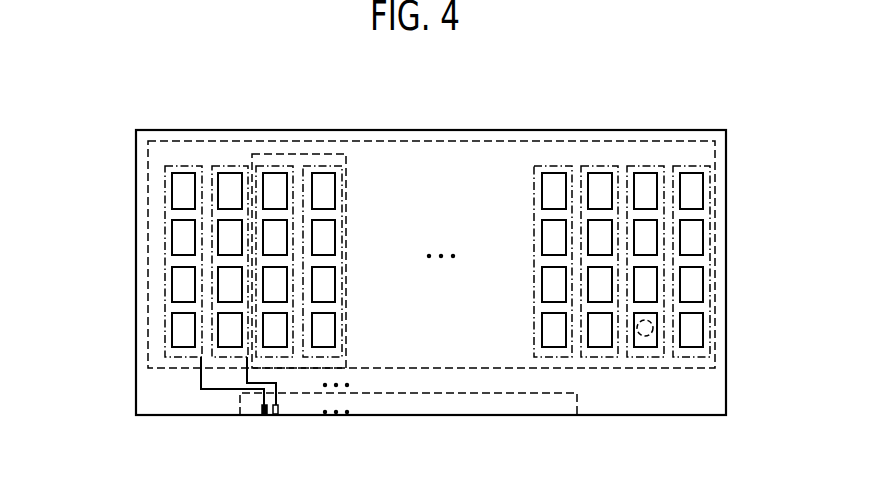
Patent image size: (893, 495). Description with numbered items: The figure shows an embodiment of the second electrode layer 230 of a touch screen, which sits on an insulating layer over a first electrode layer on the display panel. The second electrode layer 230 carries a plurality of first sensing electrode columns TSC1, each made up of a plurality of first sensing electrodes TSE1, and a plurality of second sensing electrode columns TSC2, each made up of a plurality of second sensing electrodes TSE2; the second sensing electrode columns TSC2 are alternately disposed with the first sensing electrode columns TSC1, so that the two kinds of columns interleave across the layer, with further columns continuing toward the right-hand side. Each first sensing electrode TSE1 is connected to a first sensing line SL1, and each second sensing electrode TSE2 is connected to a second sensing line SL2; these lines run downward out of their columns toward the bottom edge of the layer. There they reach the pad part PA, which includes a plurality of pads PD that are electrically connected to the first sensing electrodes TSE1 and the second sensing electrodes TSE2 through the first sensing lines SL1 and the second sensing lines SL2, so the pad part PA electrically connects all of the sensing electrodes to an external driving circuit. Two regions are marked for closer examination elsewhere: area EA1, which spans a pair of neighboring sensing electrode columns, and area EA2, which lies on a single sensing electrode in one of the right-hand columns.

The second electrode layer 230 is at (687, 129).
The second sensing electrode column TSC2 is at (140, 221).
The first sensing electrode column TSC1 is at (178, 221).
The second sensing electrode TSE2 is at (172, 192).
The first sensing electrode TSE1 is at (218, 240).
The area EA1 is at (328, 153).
The area EA2 is at (645, 336).
The second sensing line SL2 is at (210, 390).
The first sensing line SL1 is at (277, 385).
The pad PD is at (265, 415).
The pad part PA is at (482, 412).